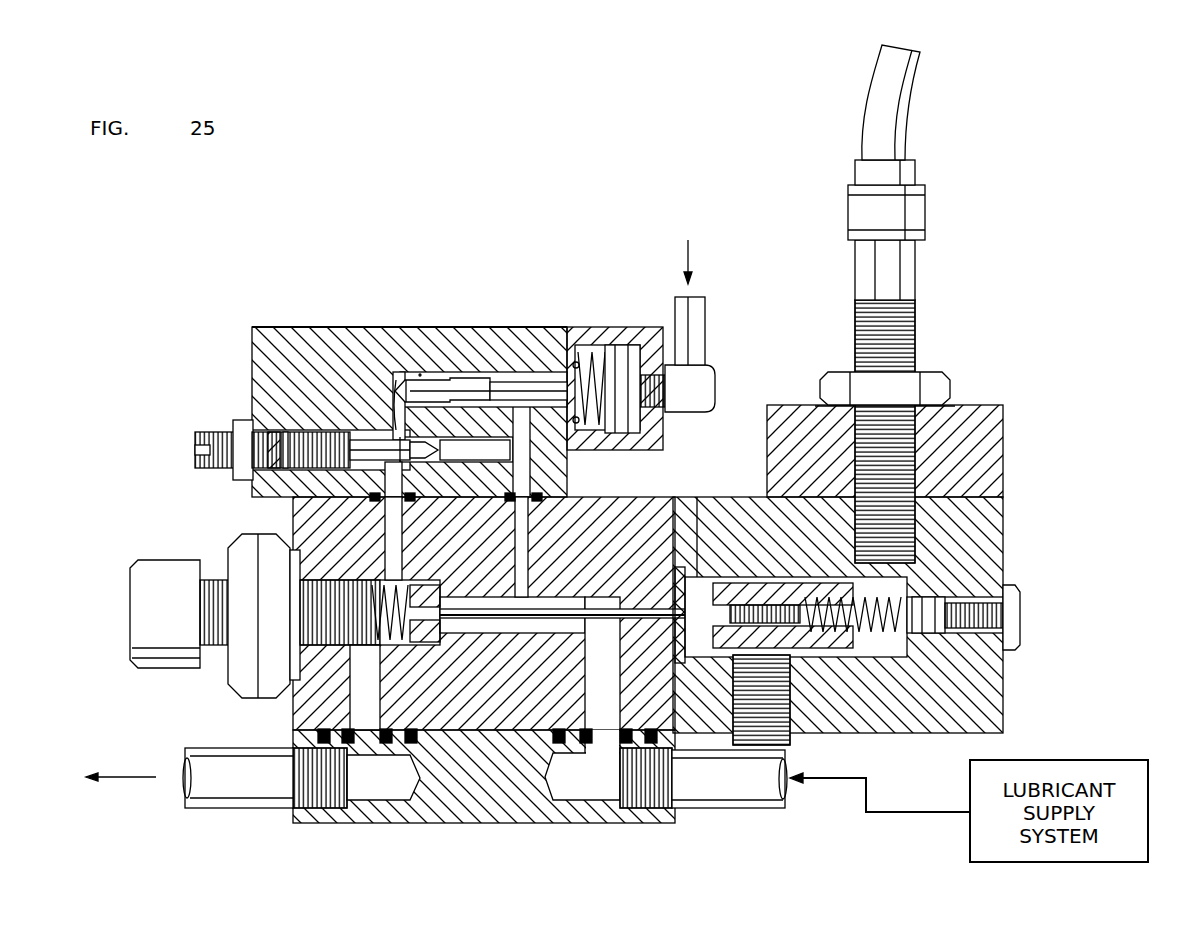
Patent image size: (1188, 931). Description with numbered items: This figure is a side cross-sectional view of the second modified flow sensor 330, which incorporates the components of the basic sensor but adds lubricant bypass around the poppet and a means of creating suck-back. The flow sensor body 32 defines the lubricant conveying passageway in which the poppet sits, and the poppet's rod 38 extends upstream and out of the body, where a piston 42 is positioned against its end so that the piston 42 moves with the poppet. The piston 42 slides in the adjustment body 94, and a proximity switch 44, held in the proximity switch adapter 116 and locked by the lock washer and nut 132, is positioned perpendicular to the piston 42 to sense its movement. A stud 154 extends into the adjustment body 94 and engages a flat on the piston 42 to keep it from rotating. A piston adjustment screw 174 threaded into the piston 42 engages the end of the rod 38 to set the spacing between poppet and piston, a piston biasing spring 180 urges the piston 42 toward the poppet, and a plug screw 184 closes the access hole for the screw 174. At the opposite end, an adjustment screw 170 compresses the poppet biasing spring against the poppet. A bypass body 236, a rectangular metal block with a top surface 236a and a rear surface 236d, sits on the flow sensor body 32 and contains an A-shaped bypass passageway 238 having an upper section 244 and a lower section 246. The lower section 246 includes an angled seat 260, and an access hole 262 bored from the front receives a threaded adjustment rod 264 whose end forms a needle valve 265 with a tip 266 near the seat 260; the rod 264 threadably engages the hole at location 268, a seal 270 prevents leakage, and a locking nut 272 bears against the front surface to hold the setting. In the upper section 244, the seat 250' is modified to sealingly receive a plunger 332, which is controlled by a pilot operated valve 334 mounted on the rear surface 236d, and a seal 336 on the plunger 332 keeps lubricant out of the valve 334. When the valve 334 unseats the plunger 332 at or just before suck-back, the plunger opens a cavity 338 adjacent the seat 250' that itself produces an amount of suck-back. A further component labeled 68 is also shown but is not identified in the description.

The flow sensor body 32 is at (661, 490).
The rod 38 is at (700, 540).
The piston 42 is at (762, 583).
The proximity switch 44 is at (925, 263).
The base plate 68 is at (420, 842).
The adjustment body 94 is at (1010, 673).
The proximity switch adapter 116 is at (1012, 437).
The lock washer and nut 132 is at (925, 370).
The stud 154 is at (790, 742).
The adjustment screw 170 is at (172, 555).
The piston adjustment screw 174 is at (930, 596).
The piston biasing spring 180 is at (890, 650).
The plug screw 184 is at (1017, 590).
The bypass body 236 is at (248, 323).
The top surface 236a is at (272, 325).
The rear surface 236d is at (567, 471).
The bypass passageway 238 is at (420, 365).
The upper section 244 is at (397, 378).
The lower section 246 is at (447, 452).
The seat 250' is at (441, 315).
The angled seat 260 is at (405, 448).
The access hole 262 is at (266, 430).
The threaded adjustment rod 264 is at (195, 445).
The needle valve 265 is at (393, 440).
The tip 266 is at (432, 456).
The location 268 is at (320, 432).
The seal 270 is at (290, 497).
The locking nut 272 is at (243, 420).
The flow sensor 330 is at (392, 160).
The plunger 332 is at (497, 385).
The pilot operated valve 334 is at (618, 318).
The seal 336 is at (565, 370).
The cavity 338 is at (468, 372).